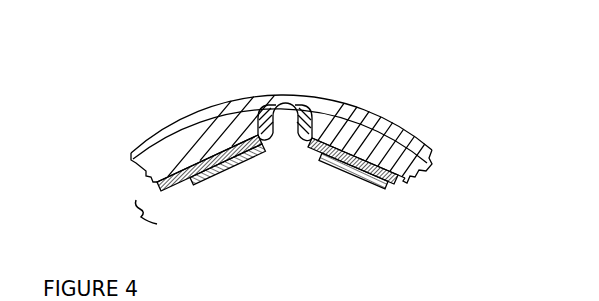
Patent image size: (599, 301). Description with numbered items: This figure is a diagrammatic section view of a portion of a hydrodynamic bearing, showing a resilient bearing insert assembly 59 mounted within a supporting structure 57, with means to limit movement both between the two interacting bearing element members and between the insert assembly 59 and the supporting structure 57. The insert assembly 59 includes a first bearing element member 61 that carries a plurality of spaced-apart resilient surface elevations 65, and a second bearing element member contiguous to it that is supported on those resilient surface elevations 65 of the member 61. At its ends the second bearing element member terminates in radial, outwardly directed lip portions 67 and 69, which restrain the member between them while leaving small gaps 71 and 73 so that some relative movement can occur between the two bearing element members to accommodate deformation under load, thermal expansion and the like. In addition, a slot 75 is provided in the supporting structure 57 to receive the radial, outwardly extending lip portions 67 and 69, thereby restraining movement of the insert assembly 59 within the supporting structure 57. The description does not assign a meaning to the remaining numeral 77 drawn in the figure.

The supporting structure 57 is at (208, 107).
The resilient bearing insert assembly 59 is at (133, 223).
The first bearing element member 61 is at (437, 136).
The resilient surface elevations 65 is at (392, 128).
The lip portion 67 is at (270, 110).
The lip portion 69 is at (318, 118).
The gap 71 is at (254, 112).
The gap 73 is at (372, 135).
The slot 75 is at (296, 113).
The slot 77 is at (282, 135).